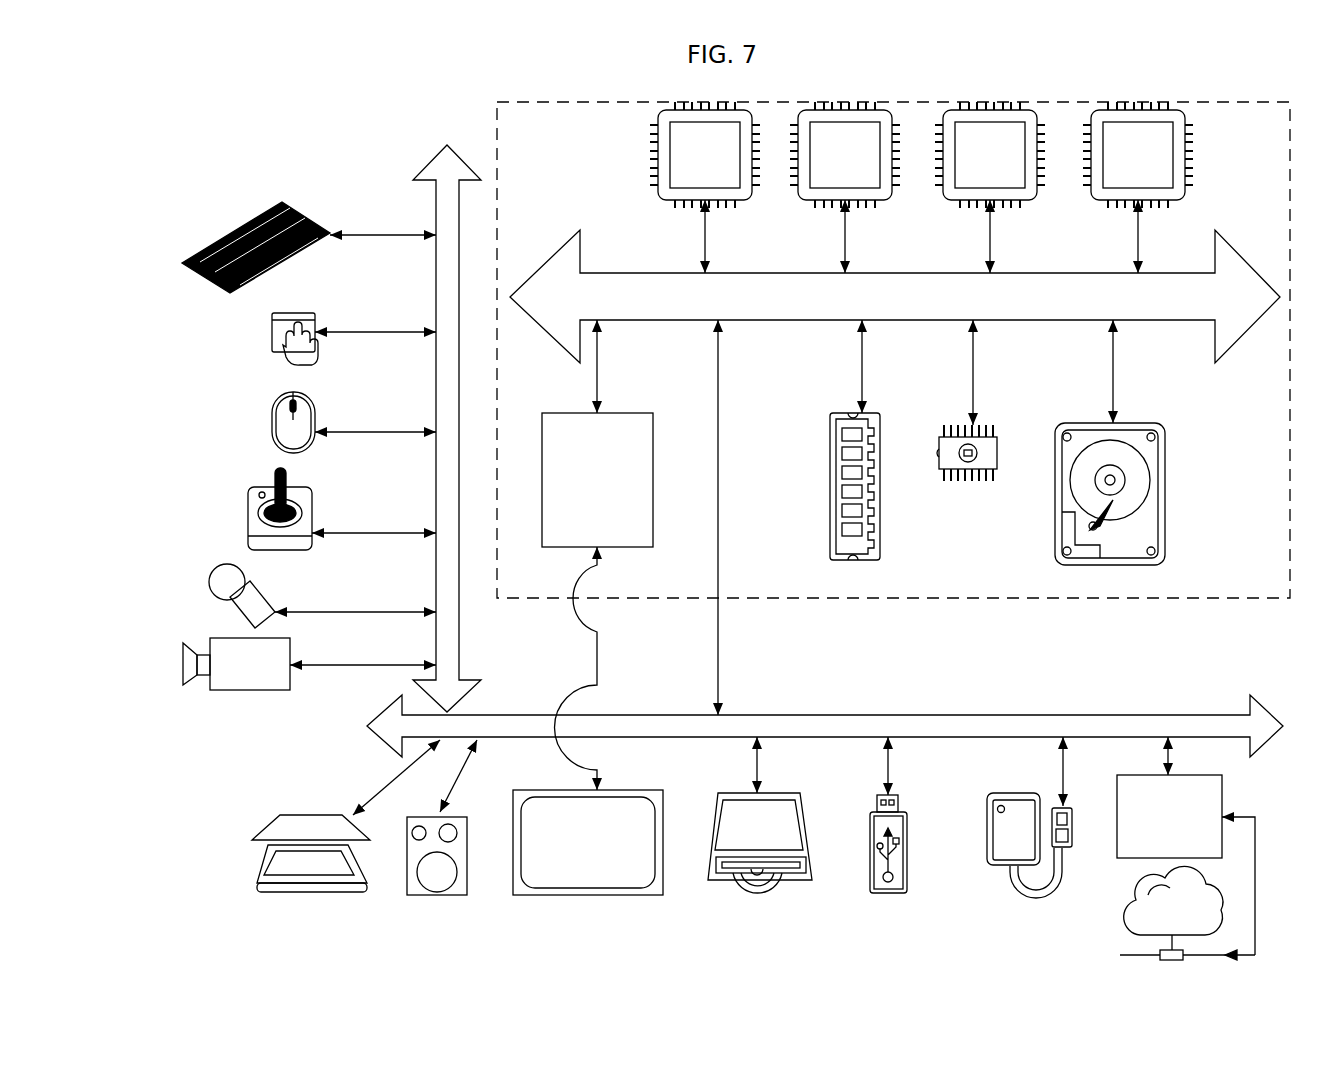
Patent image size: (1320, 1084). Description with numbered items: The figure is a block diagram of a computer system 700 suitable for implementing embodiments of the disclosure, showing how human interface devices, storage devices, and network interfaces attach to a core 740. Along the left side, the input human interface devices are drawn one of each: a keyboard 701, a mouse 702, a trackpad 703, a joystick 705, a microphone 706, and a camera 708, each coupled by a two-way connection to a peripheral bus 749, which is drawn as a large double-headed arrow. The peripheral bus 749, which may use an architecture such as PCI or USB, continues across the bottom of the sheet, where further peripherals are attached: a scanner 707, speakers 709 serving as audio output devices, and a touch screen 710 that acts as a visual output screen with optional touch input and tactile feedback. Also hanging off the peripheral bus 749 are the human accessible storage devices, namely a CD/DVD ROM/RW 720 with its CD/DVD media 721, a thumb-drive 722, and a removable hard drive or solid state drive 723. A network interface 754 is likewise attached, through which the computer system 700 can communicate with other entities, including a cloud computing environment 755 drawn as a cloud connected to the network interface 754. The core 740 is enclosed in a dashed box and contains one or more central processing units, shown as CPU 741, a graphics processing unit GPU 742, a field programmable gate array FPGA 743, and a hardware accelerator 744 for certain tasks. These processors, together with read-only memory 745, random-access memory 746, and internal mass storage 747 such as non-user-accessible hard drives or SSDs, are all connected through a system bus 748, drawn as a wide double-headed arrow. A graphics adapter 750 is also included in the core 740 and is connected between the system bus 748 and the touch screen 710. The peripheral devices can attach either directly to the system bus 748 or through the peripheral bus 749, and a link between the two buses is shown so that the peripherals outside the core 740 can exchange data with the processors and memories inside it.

The computer system 700 is at (240, 147).
The keyboard 701 is at (182, 265).
The mouse 702 is at (263, 425).
The trackpad 703 is at (265, 340).
The joystick 705 is at (248, 535).
The microphone 706 is at (210, 590).
The scanner 707 is at (258, 875).
The camera 708 is at (200, 672).
The speakers 709 is at (437, 895).
The touch screen 710 is at (575, 895).
The CD/DVD ROM/RW 720 is at (777, 844).
The CD/DVD media 721 is at (740, 890).
The thumb-drive 722 is at (880, 895).
The removable hard drive or solid state drive 723 is at (995, 865).
The core 740 is at (913, 598).
The Central Processing Unit (CPU) 741 is at (688, 178).
The Graphics Processing Unit (GPU) 742 is at (828, 178).
The Field Programmable Gate Array (FPGA) 743 is at (973, 178).
The hardware accelerator 744 is at (1121, 178).
The Read-only memory (ROM) 745 is at (960, 482).
The Random-access memory 746 is at (830, 478).
The internal mass storage 747 is at (1072, 423).
The system bus 748 is at (1022, 308).
The peripheral bus 749 is at (436, 182).
The graphics adapter 750 is at (597, 555).
The network interface 754 is at (1186, 846).
The cloud computing environment 755 is at (1120, 915).